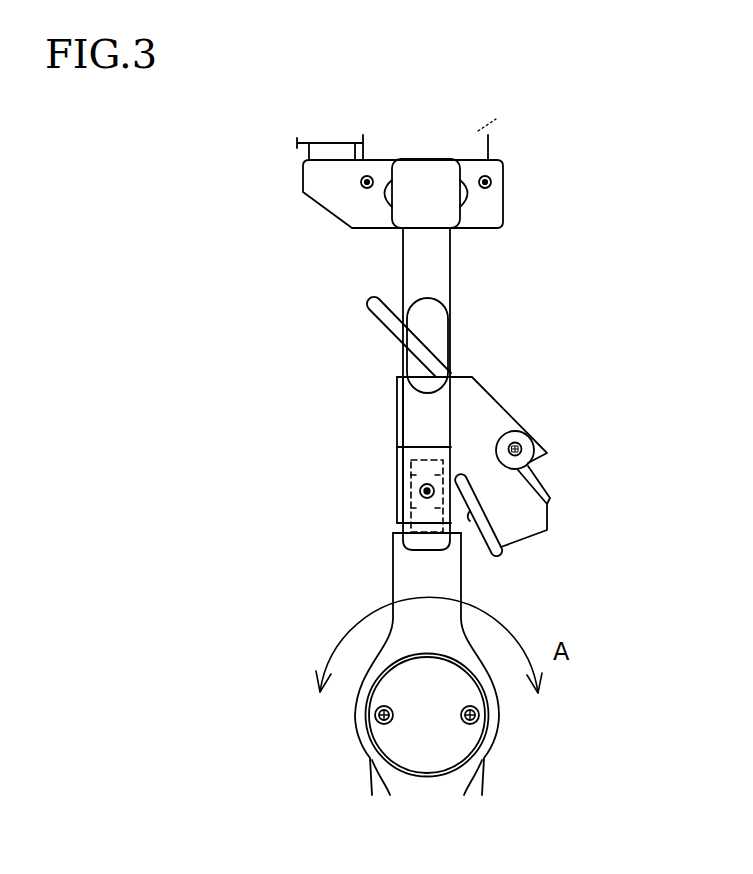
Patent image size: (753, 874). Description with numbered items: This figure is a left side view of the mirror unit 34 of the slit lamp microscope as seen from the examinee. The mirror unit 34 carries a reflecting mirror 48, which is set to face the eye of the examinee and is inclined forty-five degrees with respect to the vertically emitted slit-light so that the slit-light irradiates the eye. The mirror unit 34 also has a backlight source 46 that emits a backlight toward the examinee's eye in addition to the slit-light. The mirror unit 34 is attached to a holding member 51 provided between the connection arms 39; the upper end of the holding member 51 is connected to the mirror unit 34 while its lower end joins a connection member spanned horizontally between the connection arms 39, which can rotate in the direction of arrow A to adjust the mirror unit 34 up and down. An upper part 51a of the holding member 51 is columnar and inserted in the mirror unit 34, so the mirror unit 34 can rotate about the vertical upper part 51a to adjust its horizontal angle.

The connection arms 39 is at (415, 272).
The reflecting mirror 48 is at (430, 348).
The mirror unit 34 is at (512, 427).
The backlight source 46 is at (542, 488).
The holding member 51 is at (405, 528).
The upper part of the holding member 51a is at (410, 475).